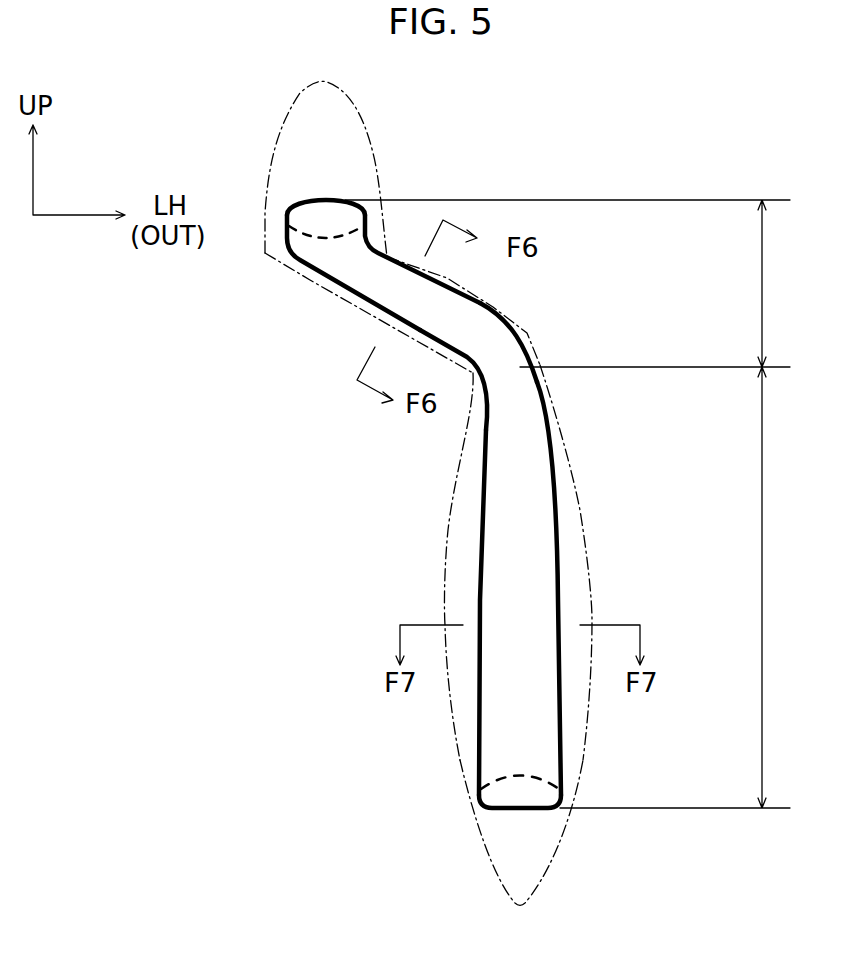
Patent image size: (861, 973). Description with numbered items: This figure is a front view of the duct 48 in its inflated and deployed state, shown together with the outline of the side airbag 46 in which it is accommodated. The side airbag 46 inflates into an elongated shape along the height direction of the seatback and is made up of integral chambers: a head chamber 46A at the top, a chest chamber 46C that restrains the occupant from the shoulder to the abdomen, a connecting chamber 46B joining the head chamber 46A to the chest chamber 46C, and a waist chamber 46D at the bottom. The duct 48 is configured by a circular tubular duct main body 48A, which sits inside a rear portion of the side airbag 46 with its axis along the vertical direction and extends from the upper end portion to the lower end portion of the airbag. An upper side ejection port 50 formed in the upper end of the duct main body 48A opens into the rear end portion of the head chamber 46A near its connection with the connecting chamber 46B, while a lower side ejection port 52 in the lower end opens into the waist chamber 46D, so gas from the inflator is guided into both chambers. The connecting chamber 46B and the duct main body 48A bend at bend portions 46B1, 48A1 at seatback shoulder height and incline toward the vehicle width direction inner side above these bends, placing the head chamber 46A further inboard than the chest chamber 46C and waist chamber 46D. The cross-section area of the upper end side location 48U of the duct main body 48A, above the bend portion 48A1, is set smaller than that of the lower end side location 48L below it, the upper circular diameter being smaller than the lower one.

The side airbag 46 is at (469, 493).
The head chamber 46A is at (372, 138).
The connecting chamber 46B is at (360, 300).
The bend portion 46B1 is at (518, 322).
The chest chamber 46C is at (443, 590).
The waist chamber 46D is at (463, 792).
The duct 48 is at (569, 503).
The duct main body 48A is at (590, 629).
The bend portion 48A1 is at (525, 360).
The upper end side location 48U is at (569, 248).
The lower end side location 48L is at (662, 621).
The upper side ejection port 50 is at (330, 202).
The lower side ejection port 52 is at (531, 808).